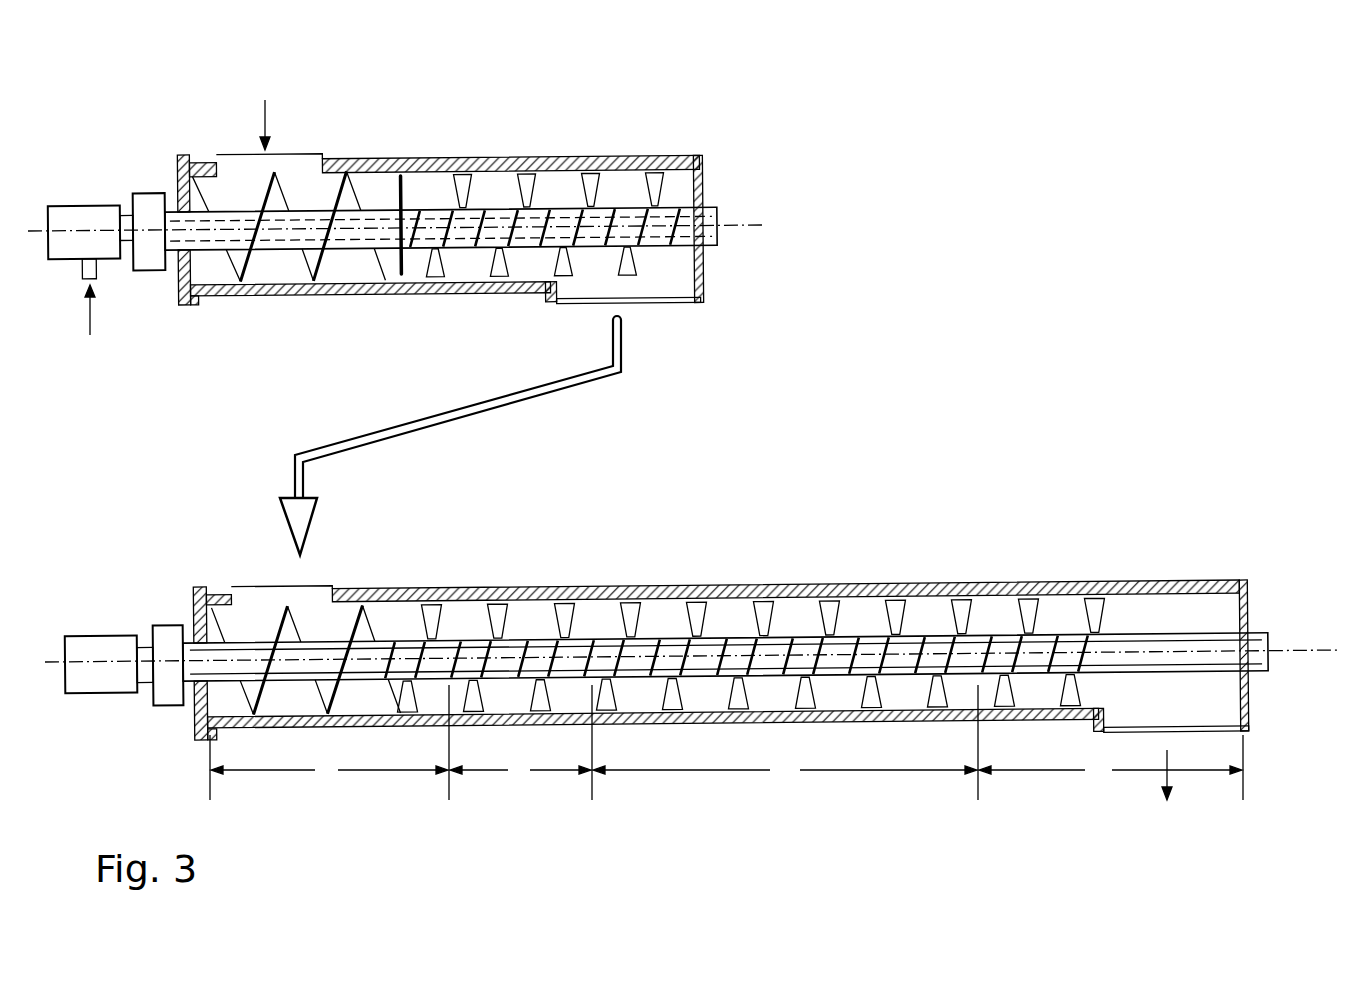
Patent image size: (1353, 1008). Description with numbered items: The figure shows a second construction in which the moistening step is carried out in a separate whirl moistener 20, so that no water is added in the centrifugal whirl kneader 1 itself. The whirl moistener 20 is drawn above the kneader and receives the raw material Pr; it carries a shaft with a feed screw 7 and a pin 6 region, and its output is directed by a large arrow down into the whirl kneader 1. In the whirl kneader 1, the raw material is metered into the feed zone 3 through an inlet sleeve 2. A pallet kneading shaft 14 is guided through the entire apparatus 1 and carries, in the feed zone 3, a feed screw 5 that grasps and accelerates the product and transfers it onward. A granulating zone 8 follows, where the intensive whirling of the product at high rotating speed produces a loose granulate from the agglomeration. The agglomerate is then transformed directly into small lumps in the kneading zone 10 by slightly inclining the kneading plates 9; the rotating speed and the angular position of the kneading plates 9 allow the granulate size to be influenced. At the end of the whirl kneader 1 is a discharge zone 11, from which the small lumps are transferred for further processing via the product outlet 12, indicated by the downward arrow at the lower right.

The whirl kneader 1 is at (806, 480).
The inlet sleeve 2 is at (317, 603).
The feed zone 3 is at (329, 742).
The feed screw 5 is at (276, 630).
The pin 6 is at (397, 180).
The bore hole 7 is at (302, 205).
The granulating zone 8 is at (521, 742).
The kneading plates 9 is at (838, 608).
The kneading zone 10 is at (785, 742).
The discharge zone 11 is at (1111, 767).
The product outlet 12 is at (1222, 710).
The pallet kneading shaft 14 is at (734, 650).
The whirl moistener 20 is at (541, 98).
The raw material Pr is at (264, 111).